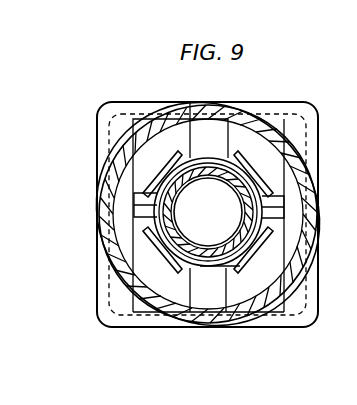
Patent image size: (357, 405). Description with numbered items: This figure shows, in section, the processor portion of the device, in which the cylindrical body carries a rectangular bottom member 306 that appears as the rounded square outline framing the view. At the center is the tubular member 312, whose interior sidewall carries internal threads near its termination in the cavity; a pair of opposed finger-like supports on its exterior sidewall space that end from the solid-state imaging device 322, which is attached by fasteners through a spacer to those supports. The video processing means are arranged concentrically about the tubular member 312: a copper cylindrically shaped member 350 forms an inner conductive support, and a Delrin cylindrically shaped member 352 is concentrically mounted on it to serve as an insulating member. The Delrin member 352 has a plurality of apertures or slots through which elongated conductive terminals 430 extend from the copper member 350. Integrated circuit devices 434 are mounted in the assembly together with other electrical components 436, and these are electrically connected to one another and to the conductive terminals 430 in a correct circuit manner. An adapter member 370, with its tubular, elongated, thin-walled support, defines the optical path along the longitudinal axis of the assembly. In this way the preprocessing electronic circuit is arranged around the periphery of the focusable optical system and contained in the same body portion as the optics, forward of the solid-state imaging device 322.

The bottom member 306 is at (284, 328).
The tubular member 312 is at (205, 186).
The solid-state imaging device 322 is at (215, 110).
The copper cylindrically shaped member 350 is at (176, 316).
The Delrin cylindrically shaped member 352 is at (232, 290).
The adapter member 370 is at (83, 280).
The elongated conductive terminals 430 is at (150, 162).
The integrated circuit devices 434 is at (138, 130).
The electrical components 436 is at (136, 210).